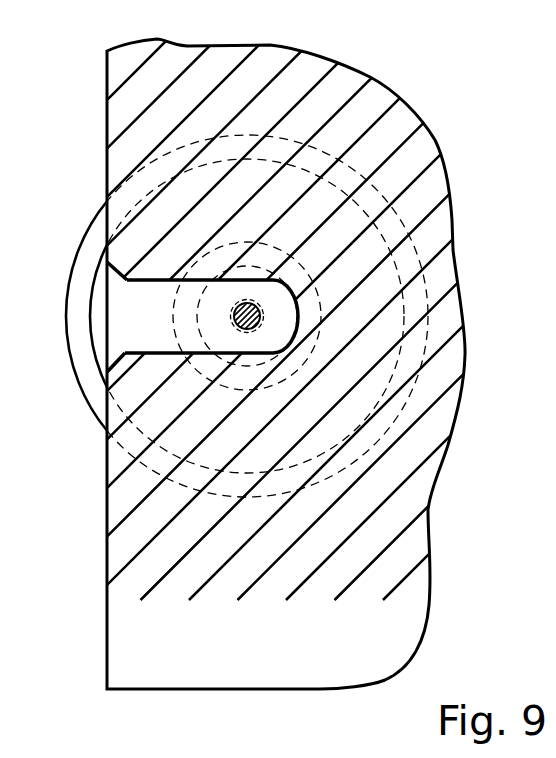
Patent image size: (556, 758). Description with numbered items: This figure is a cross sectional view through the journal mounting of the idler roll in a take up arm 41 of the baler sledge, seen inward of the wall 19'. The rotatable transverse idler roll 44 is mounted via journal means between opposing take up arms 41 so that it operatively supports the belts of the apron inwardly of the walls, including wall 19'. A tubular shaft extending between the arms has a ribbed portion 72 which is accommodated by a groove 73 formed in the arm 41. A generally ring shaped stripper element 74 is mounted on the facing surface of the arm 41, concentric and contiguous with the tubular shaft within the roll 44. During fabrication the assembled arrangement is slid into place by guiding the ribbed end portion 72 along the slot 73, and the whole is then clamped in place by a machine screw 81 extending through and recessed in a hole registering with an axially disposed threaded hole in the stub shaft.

The wall 19' is at (24, 62).
The take up arm 41 is at (123, 633).
The rotatable transverse idler roll 44 is at (90, 222).
The ribbed portion 72 is at (212, 329).
The groove 73 is at (113, 277).
The stripper element 74 is at (97, 312).
The machine screw 81 is at (248, 303).